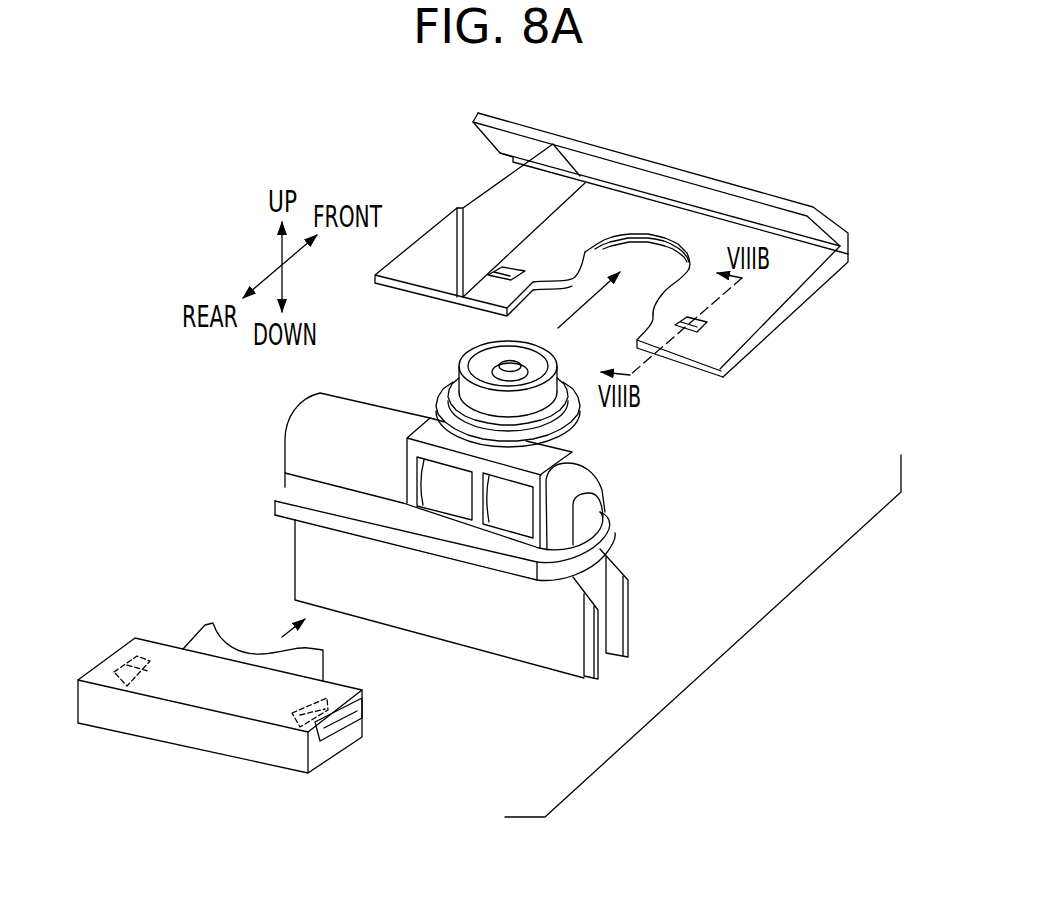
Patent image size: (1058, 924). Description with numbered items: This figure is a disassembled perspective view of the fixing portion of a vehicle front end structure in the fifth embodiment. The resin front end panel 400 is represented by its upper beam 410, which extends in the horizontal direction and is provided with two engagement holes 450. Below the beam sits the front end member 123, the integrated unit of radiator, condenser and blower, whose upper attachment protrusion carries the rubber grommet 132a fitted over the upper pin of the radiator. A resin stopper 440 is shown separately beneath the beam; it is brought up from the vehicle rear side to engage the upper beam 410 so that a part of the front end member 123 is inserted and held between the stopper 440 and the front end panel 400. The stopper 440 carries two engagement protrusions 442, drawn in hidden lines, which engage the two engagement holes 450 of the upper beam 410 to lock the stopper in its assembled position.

The front end panel 400 is at (650, 245).
The upper beam 410 is at (778, 328).
The engagement hole 450 is at (503, 274).
The grommet 132a is at (557, 412).
The front end member 123 is at (501, 510).
The stopper 440 is at (218, 711).
The engagement protrusion 442 is at (120, 686).